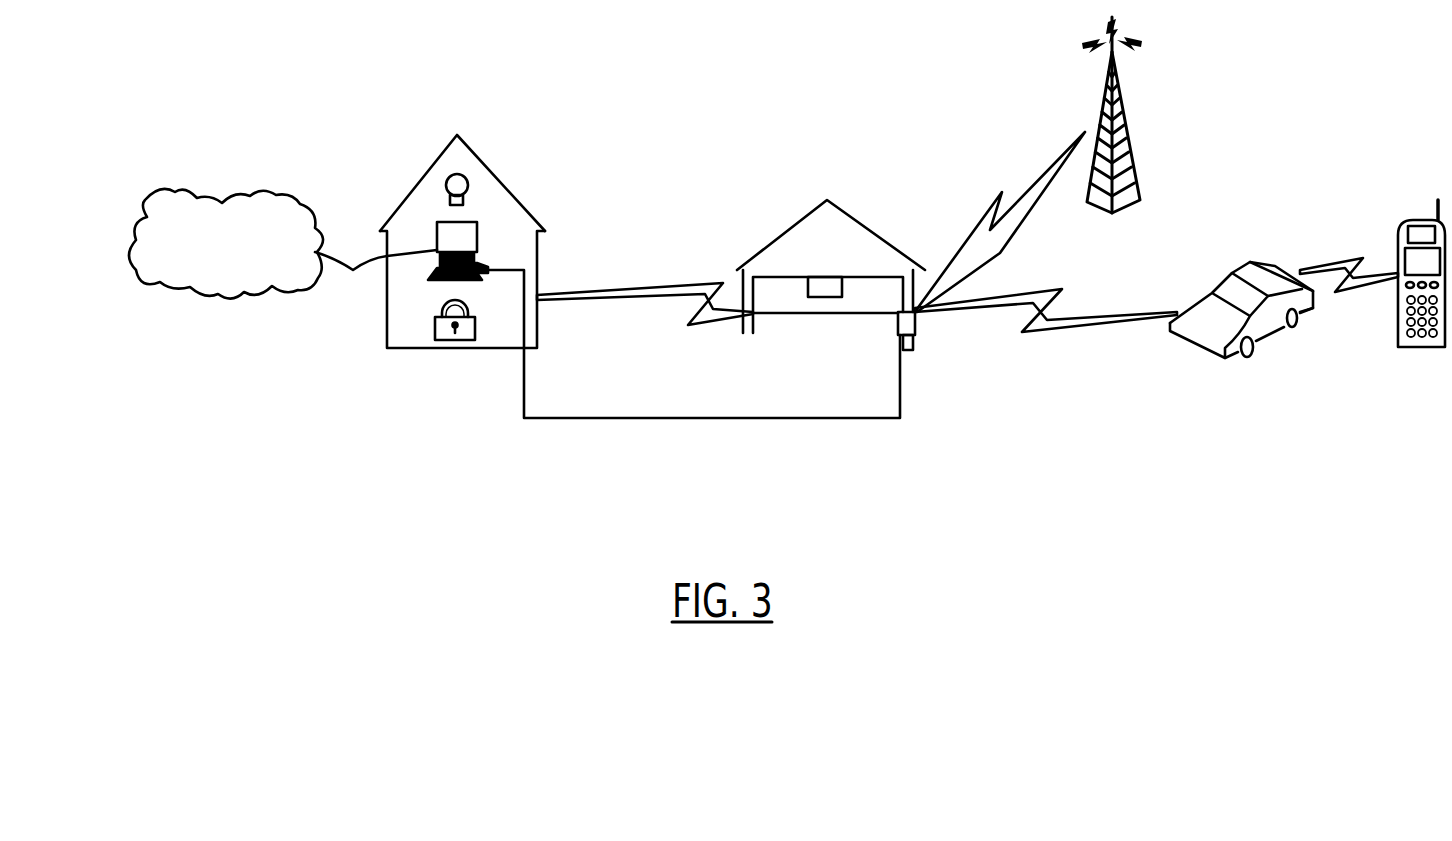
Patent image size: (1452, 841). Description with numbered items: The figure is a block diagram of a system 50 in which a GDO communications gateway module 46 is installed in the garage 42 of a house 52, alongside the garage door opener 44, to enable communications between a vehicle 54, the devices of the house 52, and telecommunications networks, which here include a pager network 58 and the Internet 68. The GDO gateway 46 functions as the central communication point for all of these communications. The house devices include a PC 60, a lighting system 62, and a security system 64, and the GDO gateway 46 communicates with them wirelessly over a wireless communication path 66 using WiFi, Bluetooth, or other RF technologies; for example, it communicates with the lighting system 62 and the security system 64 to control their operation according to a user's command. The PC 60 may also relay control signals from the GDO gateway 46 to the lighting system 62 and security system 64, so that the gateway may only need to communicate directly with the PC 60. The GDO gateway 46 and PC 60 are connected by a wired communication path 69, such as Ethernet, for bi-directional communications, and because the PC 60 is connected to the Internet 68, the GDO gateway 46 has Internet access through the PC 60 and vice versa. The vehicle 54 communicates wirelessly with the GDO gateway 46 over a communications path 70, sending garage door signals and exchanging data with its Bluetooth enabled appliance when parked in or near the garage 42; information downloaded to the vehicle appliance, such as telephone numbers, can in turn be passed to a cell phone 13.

The cell phone 13 is at (1420, 348).
The garage 42 is at (787, 228).
The garage door opener 44 is at (842, 288).
The GDO communications gateway module 46 is at (917, 330).
The system 50 is at (1295, 98).
The house 52 is at (427, 168).
The vehicle 54 is at (1230, 273).
The pager network 58 is at (1045, 182).
The PC 60 is at (477, 244).
The lighting system 62 is at (463, 193).
The security system 64 is at (438, 343).
The wireless communication path 66 is at (700, 285).
The Internet 68 is at (218, 202).
The wired communication path 69 is at (790, 420).
The communications path 70 is at (1082, 323).